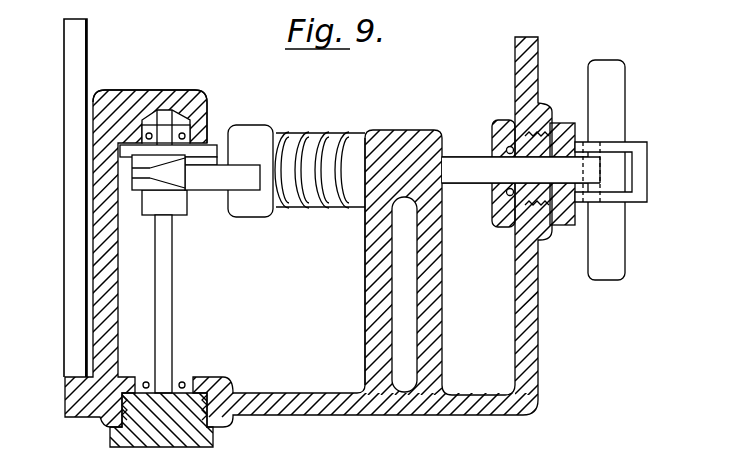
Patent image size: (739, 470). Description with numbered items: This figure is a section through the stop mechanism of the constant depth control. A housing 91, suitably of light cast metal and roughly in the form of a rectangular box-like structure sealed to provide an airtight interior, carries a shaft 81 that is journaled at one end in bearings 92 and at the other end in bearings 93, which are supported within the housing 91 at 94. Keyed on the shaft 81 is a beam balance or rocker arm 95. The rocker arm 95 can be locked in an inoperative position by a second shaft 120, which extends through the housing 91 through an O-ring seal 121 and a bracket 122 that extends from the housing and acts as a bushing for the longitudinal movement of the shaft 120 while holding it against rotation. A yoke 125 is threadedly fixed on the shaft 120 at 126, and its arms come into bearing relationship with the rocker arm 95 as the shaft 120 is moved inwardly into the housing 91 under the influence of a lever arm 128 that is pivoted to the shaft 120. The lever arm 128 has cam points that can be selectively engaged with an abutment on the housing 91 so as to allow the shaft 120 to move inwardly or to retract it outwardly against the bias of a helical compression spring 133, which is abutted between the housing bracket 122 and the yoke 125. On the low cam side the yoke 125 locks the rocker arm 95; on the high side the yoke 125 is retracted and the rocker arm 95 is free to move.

The shaft 81 is at (167, 321).
The housing 91 is at (523, 390).
The bearings 92 is at (183, 382).
The bearings 93 is at (197, 133).
The bearing support location 94 is at (145, 100).
The rocker arm 95 is at (148, 175).
The shaft 120 is at (473, 180).
The O-ring seal 121 is at (508, 150).
The bracket 122 is at (373, 310).
The yoke 125 is at (258, 210).
The threaded connection 126 is at (208, 182).
The lever arm 128 is at (610, 118).
The helical compression spring 133 is at (355, 116).